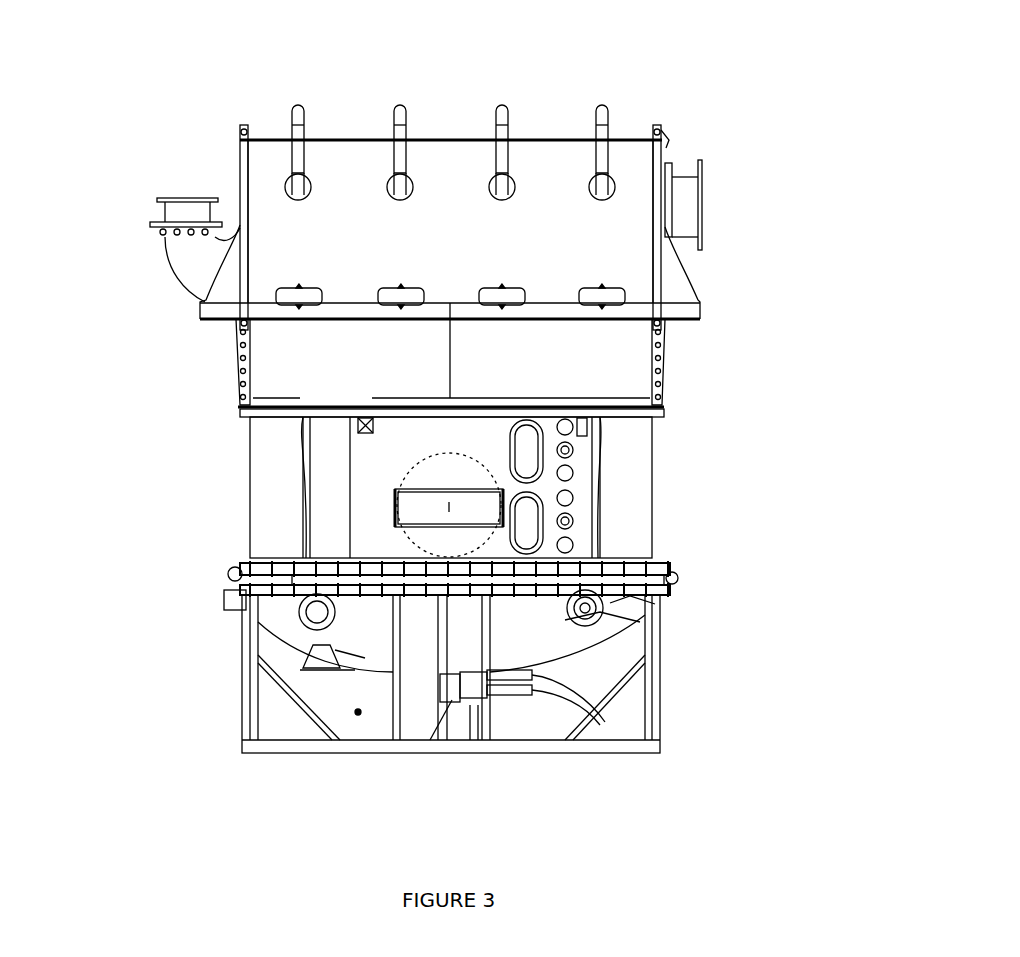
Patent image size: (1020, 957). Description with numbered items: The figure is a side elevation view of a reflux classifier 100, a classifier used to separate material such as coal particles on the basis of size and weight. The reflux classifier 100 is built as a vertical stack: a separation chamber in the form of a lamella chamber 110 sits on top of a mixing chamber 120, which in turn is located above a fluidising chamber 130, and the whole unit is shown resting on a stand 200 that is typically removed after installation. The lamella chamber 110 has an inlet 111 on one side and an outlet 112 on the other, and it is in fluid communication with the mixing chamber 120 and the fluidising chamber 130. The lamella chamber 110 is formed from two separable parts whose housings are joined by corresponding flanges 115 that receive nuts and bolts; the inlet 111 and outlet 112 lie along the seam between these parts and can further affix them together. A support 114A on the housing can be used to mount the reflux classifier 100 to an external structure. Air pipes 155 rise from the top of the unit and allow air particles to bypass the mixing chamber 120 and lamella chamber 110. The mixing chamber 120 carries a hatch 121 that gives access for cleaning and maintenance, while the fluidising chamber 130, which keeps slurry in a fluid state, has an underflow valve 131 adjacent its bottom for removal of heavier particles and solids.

The reflux classifier 100 is at (692, 60).
The lamella chamber 110 is at (354, 172).
The inlet 111 is at (160, 196).
The outlet 112 is at (706, 161).
The support 114A is at (198, 309).
The flanges 115 is at (236, 369).
The mixing chamber 120 is at (274, 497).
The hatch 121 is at (400, 469).
The fluidising chamber 130 is at (298, 578).
The underflow valve 131 is at (458, 706).
The air pipe 155 is at (292, 103).
The stand 200 is at (238, 719).